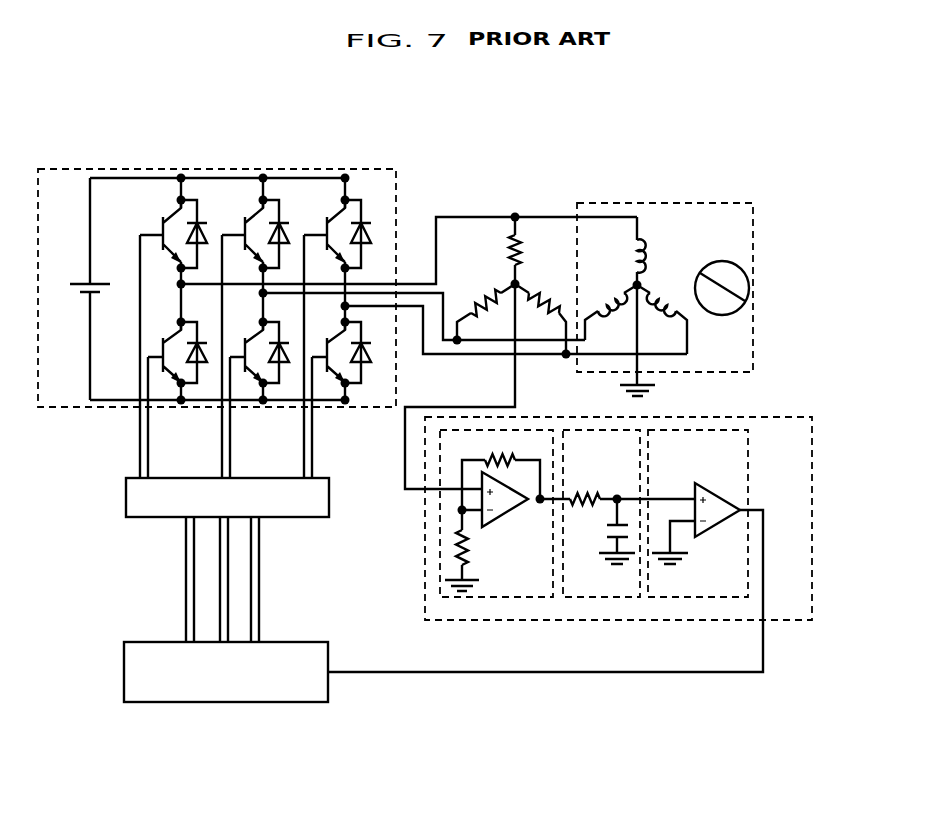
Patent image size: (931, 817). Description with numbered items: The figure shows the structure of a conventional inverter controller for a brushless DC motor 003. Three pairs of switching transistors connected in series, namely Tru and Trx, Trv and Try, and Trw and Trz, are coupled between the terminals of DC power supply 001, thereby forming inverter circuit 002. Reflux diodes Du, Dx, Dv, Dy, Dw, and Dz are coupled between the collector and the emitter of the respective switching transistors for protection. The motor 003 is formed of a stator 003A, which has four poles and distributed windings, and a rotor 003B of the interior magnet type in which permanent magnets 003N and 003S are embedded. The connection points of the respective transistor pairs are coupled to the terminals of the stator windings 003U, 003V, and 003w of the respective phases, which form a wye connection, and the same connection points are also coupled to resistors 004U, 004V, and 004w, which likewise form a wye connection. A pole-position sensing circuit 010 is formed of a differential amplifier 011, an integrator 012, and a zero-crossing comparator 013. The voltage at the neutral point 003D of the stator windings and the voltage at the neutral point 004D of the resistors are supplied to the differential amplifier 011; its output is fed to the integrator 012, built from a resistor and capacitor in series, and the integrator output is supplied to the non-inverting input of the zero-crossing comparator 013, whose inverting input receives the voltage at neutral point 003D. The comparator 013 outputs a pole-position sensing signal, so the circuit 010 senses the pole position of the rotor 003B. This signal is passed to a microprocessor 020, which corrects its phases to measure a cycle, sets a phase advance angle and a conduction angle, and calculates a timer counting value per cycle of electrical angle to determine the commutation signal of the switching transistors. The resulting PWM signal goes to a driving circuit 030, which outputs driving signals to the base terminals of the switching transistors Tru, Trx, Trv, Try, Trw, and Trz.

The DC power supply 001 is at (80, 277).
The inverter circuit 002 is at (67, 410).
The brushless DC motor 003 is at (738, 203).
The stator 003A is at (645, 280).
The stator winding 003U is at (632, 216).
The stator winding 003V is at (607, 290).
The stator winding 003w is at (668, 317).
The neutral point 003D is at (642, 281).
The rotor 003B is at (749, 294).
The permanent magnet 003N is at (713, 268).
The permanent magnet 003S is at (725, 310).
The resistor 004U is at (508, 234).
The resistor 004V is at (482, 295).
The resistor 004w is at (540, 313).
The neutral point 004D is at (520, 283).
The pole-position sensing circuit 010 is at (792, 622).
The differential amplifier 011 is at (507, 597).
The integrator 012 is at (607, 597).
The zero-crossing comparator 013 is at (704, 483).
The microprocessor 020 is at (148, 703).
The driving circuit 030 is at (148, 520).
The switching transistor Tru is at (170, 212).
The switching transistor Trv is at (255, 212).
The switching transistor Trw is at (336, 215).
The switching transistor Trx is at (169, 372).
The switching transistor Try is at (251, 372).
The switching transistor Trz is at (333, 372).
The reflux diode Du is at (198, 220).
The reflux diode Dv is at (288, 215).
The reflux diode Dw is at (370, 222).
The reflux diode Dx is at (202, 372).
The reflux diode Dy is at (284, 372).
The reflux diode Dz is at (366, 372).